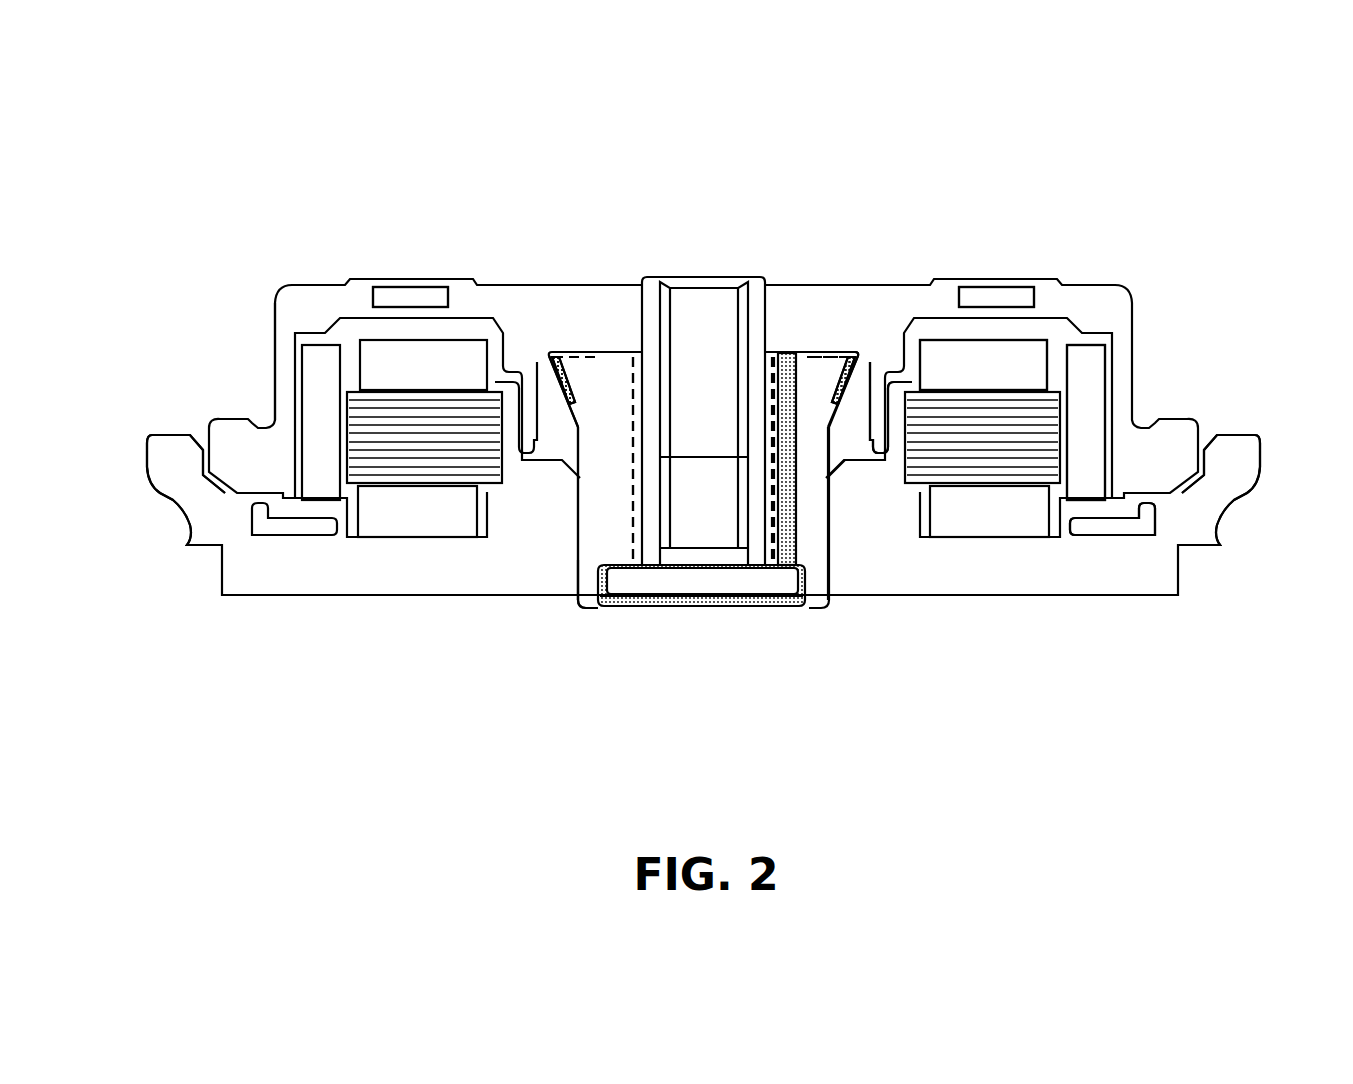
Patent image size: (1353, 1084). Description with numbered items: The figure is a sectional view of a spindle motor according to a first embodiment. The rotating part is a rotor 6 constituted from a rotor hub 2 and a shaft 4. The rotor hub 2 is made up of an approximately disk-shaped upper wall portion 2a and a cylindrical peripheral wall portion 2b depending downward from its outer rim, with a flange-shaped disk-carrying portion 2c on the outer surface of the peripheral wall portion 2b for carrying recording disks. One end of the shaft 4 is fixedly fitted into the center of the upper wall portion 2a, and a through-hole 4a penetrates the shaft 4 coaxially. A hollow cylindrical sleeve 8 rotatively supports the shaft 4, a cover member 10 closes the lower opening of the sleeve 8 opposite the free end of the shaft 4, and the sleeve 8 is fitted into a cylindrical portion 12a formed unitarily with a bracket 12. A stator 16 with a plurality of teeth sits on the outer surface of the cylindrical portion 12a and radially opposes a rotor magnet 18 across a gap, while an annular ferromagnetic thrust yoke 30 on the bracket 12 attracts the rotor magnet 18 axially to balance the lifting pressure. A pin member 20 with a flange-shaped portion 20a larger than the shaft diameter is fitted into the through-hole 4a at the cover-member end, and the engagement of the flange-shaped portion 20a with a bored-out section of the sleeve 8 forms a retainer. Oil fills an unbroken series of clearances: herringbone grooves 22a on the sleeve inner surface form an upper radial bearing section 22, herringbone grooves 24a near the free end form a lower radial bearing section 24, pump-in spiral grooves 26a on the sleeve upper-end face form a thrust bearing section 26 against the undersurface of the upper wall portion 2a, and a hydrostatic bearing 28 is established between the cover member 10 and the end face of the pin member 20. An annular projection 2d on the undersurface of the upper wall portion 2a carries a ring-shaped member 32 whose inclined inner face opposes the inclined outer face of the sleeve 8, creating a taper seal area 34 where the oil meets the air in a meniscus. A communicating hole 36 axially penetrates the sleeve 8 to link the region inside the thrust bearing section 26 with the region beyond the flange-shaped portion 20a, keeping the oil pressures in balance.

The rotor hub 2 is at (358, 275).
The upper wall portion 2a is at (473, 297).
The peripheral wall portion 2b is at (285, 385).
The disk-carrying portion 2c is at (1170, 438).
The annular projection 2d is at (918, 330).
The shaft 4 is at (650, 323).
The through-hole 4a is at (697, 313).
The rotor 6 is at (273, 297).
The sleeve 8 is at (607, 483).
The cover member 10 is at (690, 555).
The bracket 12 is at (1098, 568).
The cylindrical portion 12a is at (880, 492).
The stator 16 is at (985, 362).
The rotor magnet 18 is at (1088, 368).
The pin member 20 is at (622, 578).
The flange-shaped portion 20a is at (578, 573).
The upper radial bearing section 22 is at (770, 355).
The herringbone grooves 22a is at (633, 380).
The lower radial bearing section 24 is at (778, 543).
The herringbone grooves 24a is at (632, 523).
The thrust bearing section 26 is at (836, 355).
The pump-in spiral grooves 26a is at (575, 353).
The hydrostatic bearing 28 is at (690, 602).
The thrust yoke 30 is at (1113, 528).
The ring-shaped member 32 is at (878, 380).
The taper seal area 34 is at (567, 410).
The communicating hole 36 is at (793, 483).